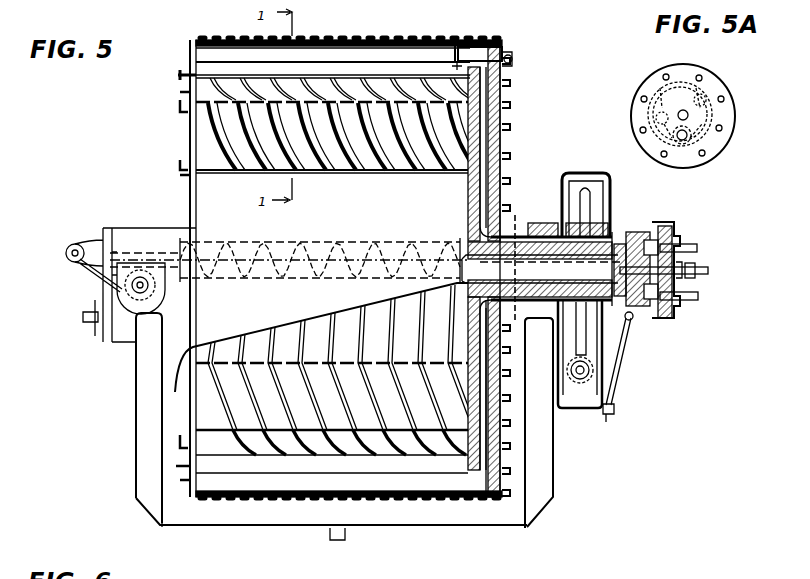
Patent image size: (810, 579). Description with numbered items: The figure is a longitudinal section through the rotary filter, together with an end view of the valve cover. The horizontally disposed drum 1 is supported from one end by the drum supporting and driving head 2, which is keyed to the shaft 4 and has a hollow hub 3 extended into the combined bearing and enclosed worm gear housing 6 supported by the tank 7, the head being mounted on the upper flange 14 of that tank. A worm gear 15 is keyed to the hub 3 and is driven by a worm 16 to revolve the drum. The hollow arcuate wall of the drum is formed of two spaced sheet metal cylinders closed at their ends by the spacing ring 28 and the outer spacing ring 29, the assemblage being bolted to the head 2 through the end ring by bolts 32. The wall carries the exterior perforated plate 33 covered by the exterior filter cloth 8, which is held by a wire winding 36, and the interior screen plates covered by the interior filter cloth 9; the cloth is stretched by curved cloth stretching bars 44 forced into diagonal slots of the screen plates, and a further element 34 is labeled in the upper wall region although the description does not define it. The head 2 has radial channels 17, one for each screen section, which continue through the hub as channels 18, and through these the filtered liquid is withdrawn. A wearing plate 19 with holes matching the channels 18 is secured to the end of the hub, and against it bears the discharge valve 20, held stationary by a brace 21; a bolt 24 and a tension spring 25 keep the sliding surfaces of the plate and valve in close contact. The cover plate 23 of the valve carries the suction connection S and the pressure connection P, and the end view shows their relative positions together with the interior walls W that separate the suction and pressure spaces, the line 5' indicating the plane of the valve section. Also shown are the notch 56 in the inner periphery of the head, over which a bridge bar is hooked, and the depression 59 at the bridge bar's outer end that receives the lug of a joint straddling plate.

In FIG. 5, the drum 1 is at (403, 56).
In FIG. 5, the head 2 is at (505, 108).
In FIG. 5, the hub 3 is at (528, 242).
In FIG. 5, the shaft 4 is at (628, 325).
In FIG. 5, the bearing and worm gear housing 6 is at (540, 224).
In FIG. 5, the tank 7 is at (527, 460).
In FIG. 5, the exterior filter cloth 8 is at (340, 38).
In FIG. 5, the interior filter cloth 9 is at (207, 132).
In FIG. 5, the upper flange 14 is at (548, 332).
In FIG. 5, the worm gear 15 is at (590, 218).
In FIG. 5, the worm 16 is at (594, 378).
In FIG. 5, the radial channels 17 is at (480, 152).
In FIG. 5, the hub channels 18 is at (606, 242).
In FIG. 5A, the hub channels 18 is at (662, 82).
In FIG. 5, the wearing plate 19 is at (620, 240).
In FIG. 5, the discharge valve 20 is at (641, 232).
In FIG. 5, the brace 21 is at (634, 319).
In FIG. 5, the cover plate 23 is at (676, 236).
In FIG. 5A, the cover plate 23 is at (640, 108).
In FIG. 5, the bolt 24 is at (708, 270).
In FIG. 5, the tension spring 25 is at (684, 262).
In FIG. 5, the spacing ring 28 is at (490, 52).
In FIG. 5, the outer spacing ring 29 is at (204, 50).
In FIG. 5, the bolts 32 is at (512, 58).
In FIG. 5, the exterior perforated plate 33 is at (372, 42).
In FIG. 5, the band 34 is at (306, 42).
In FIG. 5, the wire winding 36 is at (456, 42).
In FIG. 5, the cloth stretching bars 44 is at (432, 142).
In FIG. 5, the notch 56 is at (456, 67).
In FIG. 5, the depression 59 is at (198, 69).
In FIG. 5, the pressure connection P is at (692, 252).
In FIG. 5A, the pressure connection P is at (688, 118).
In FIG. 5, the suction connection S is at (694, 298).
In FIG. 5A, the suction connection S is at (672, 138).
In FIG. 5A, the interior walls W is at (726, 134).
In FIG. 5A, the section line 5'— 5' is at (711, 124).